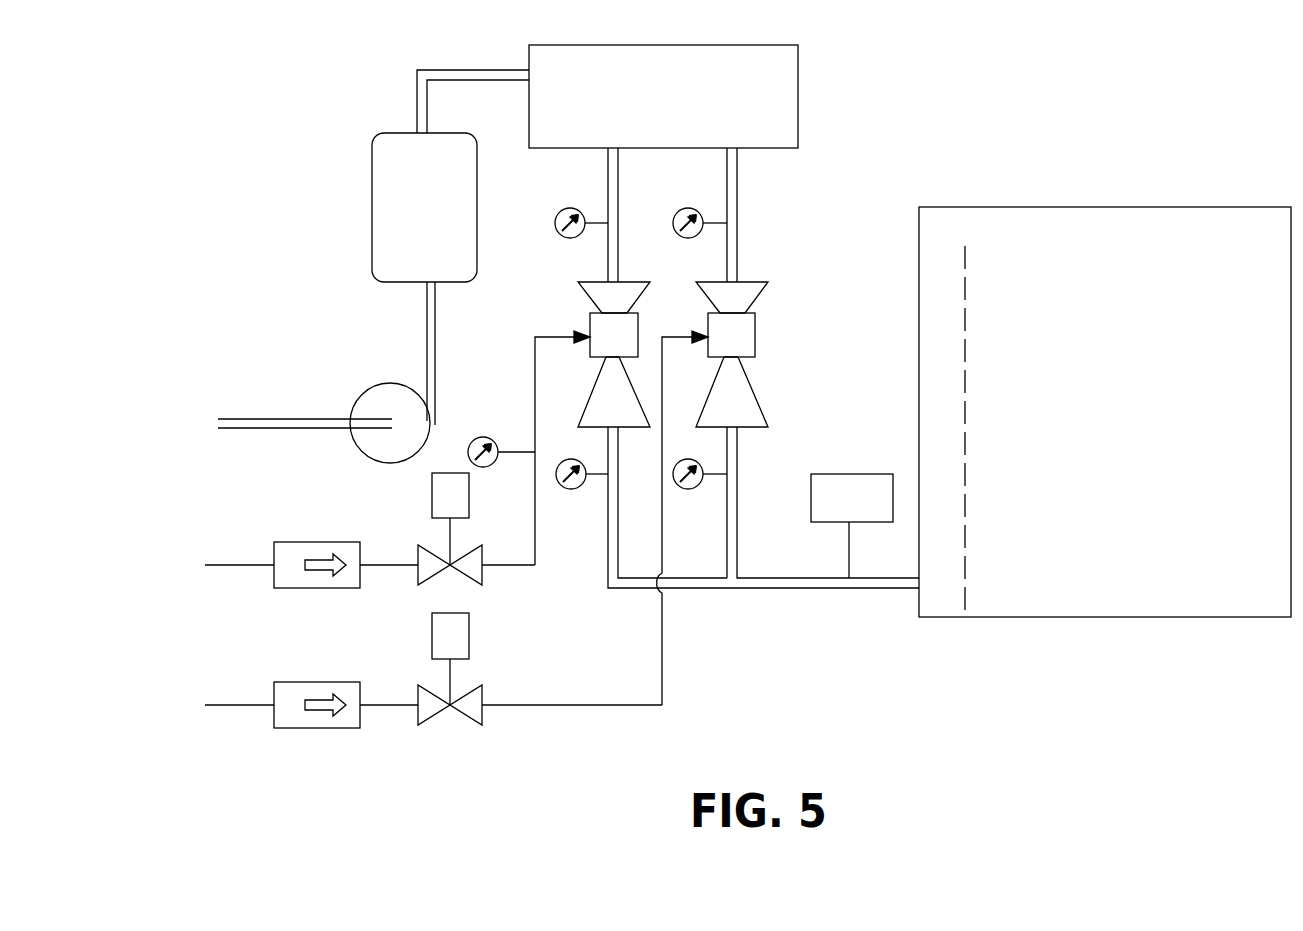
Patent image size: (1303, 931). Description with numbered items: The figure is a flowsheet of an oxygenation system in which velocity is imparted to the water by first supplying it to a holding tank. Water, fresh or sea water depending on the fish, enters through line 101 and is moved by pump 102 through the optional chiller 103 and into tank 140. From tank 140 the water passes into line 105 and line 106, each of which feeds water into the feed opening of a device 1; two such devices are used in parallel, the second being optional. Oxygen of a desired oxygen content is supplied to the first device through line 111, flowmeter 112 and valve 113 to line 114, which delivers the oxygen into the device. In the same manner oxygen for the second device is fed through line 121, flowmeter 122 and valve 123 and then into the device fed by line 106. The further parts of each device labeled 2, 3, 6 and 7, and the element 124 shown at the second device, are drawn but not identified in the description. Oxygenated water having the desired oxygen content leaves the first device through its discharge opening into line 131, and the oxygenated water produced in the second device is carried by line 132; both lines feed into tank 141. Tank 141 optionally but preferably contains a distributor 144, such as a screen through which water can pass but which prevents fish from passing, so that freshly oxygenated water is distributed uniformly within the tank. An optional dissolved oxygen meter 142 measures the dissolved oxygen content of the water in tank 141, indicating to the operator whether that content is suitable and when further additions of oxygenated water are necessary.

The device 1 is at (590, 345).
The nozzle of ejector 2 is at (590, 305).
The nozzle inlet 3 is at (598, 282).
The diffuser of ejector 6 is at (593, 390).
The diffuser outlet 7 is at (600, 428).
The line 101 is at (293, 419).
The pump 102 is at (356, 444).
The chiller 103 is at (372, 194).
The line 105 is at (608, 178).
The line 106 is at (739, 178).
The line 111 is at (248, 565).
The flowmeter 112 is at (332, 542).
The valve 113 is at (462, 555).
The line 114 is at (563, 338).
The line 121 is at (248, 705).
The flowmeter 122 is at (332, 682).
The valve 123 is at (462, 695).
The second gas feed line to ejector 124 is at (663, 333).
The line 131 is at (607, 565).
The line 132 is at (737, 550).
The tank 140 is at (685, 103).
The tank 141 is at (1138, 472).
The dissolved oxygen meter 142 is at (873, 512).
The distributor 144 is at (981, 552).